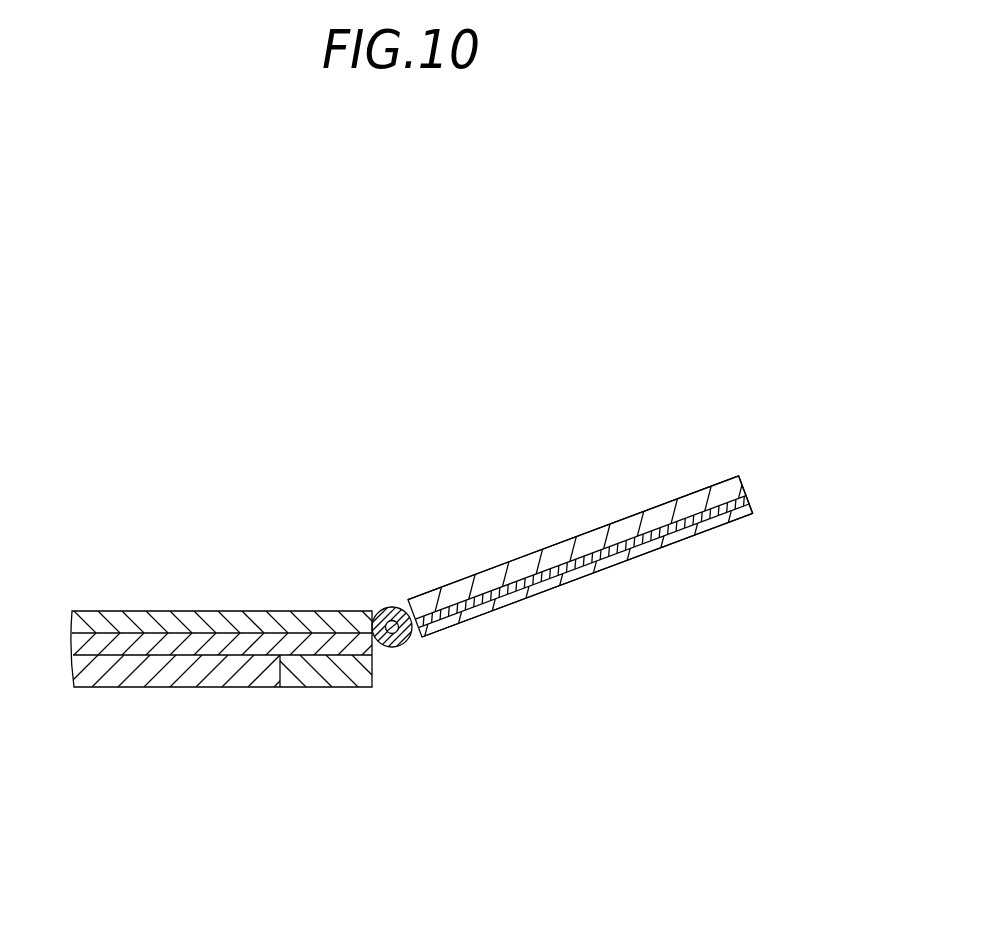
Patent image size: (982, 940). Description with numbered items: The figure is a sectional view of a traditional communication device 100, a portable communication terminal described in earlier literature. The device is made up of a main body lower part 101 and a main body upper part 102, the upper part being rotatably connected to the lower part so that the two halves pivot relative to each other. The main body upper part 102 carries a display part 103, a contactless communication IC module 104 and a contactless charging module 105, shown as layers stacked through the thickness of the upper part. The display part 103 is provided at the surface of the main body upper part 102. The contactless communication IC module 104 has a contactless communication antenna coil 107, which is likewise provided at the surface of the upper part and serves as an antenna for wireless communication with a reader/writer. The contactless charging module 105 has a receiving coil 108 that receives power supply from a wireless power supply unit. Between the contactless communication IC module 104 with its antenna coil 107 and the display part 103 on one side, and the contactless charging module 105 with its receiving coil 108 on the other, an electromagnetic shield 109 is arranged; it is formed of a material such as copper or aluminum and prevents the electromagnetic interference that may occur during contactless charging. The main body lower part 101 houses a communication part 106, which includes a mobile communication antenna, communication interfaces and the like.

The communication device 100 is at (344, 383).
The main body lower part 101 is at (202, 556).
The main body upper part 102 is at (542, 475).
The display part 103 is at (505, 579).
The contactless communication IC module 104 is at (678, 486).
The contactless charging module 105 is at (682, 551).
The communication part 106 is at (315, 682).
The contactless communication antenna coil 107 is at (623, 521).
The receiving coil 108 is at (508, 608).
The electromagnetic shield 109 is at (757, 492).